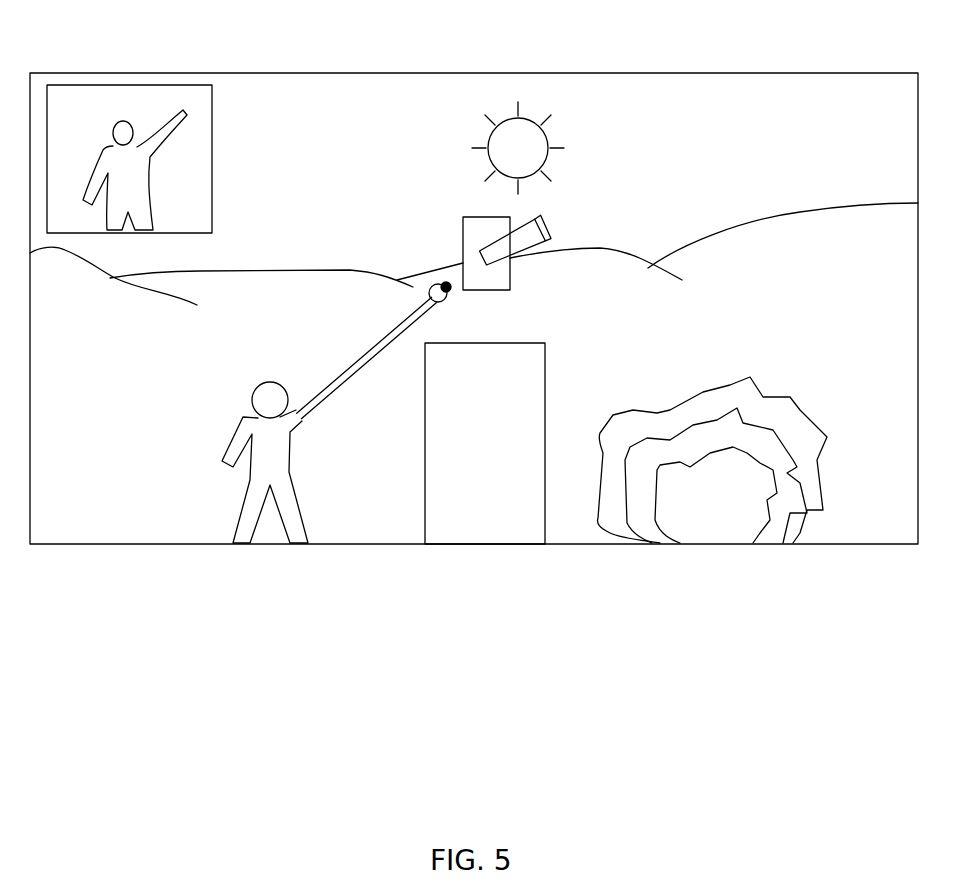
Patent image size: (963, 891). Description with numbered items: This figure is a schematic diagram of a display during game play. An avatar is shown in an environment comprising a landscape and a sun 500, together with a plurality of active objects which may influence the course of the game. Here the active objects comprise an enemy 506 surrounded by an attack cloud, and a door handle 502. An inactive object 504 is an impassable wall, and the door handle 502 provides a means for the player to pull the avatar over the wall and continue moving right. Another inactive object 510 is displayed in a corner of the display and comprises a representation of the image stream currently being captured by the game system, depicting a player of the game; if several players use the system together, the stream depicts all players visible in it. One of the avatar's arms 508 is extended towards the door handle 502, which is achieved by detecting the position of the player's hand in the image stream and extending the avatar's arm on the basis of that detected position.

The sun 500 is at (537, 110).
The door handle 502 is at (544, 228).
The inactive object 504 is at (545, 343).
The enemy 506 is at (745, 545).
The avatar's arm 508 is at (372, 352).
The inactive object 510 is at (167, 84).